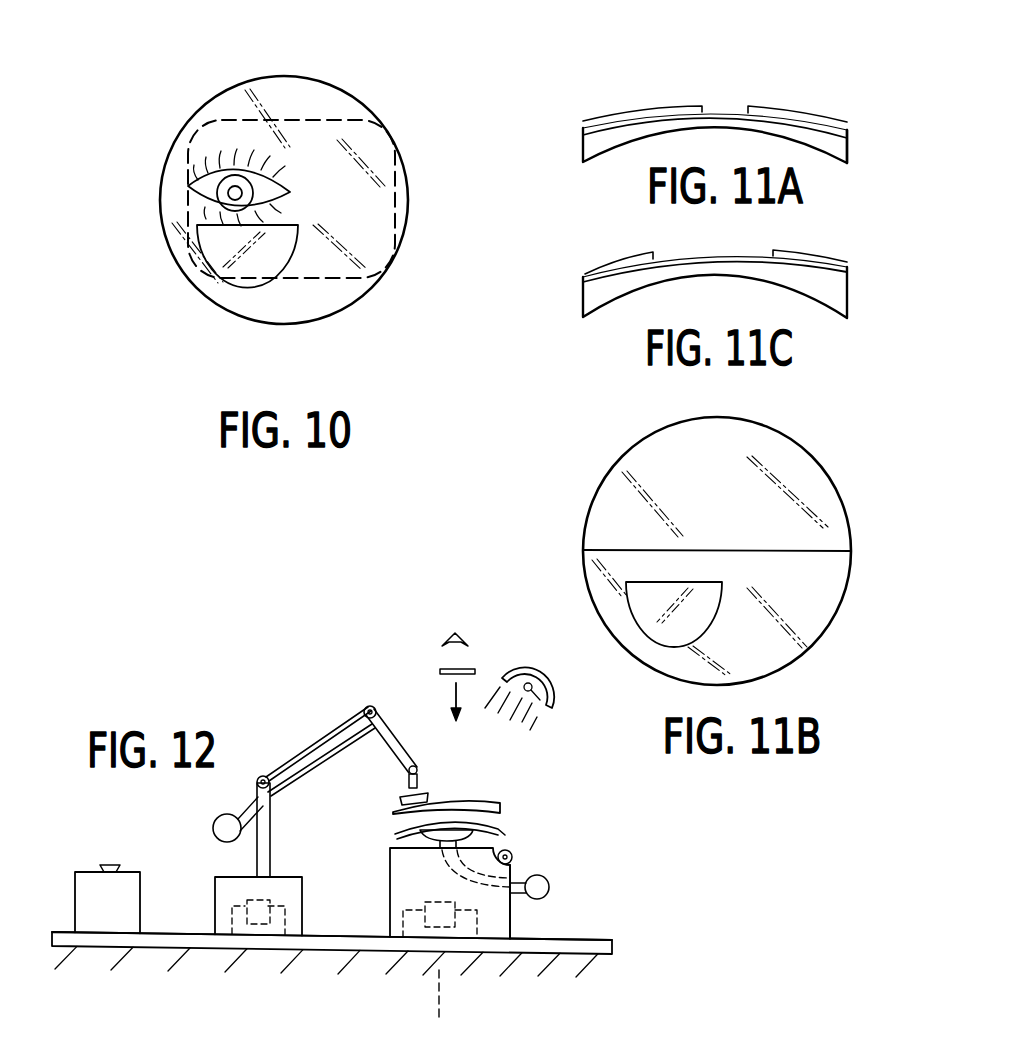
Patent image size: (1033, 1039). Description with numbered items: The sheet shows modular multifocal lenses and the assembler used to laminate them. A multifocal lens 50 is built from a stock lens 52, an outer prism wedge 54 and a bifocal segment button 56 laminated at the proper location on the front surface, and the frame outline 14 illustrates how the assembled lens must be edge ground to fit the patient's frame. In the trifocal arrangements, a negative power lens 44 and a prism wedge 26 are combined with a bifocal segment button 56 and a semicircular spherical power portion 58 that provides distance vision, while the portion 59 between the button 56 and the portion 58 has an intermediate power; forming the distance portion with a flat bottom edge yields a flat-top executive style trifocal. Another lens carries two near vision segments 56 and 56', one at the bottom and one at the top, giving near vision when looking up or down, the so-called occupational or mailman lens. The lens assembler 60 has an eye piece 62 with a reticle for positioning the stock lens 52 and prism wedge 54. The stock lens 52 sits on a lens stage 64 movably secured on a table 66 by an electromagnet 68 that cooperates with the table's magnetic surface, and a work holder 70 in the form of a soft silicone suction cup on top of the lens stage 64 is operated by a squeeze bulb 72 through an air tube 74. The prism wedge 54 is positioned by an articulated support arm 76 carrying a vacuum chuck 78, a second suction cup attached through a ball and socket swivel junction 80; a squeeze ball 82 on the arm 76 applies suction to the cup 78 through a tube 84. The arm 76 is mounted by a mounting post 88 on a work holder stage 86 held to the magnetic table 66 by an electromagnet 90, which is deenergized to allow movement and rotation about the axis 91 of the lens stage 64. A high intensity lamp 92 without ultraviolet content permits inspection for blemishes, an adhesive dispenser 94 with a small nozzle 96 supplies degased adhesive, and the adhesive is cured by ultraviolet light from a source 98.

In FIG. 10, the frame outline 14 is at (320, 120).
In FIG. 10, the multifocal lens 50 is at (138, 242).
In FIG. 10, the bifocal segment button 56 is at (226, 280).
In FIG. 11A, the bifocal segment button 56 is at (799, 97).
In FIG. 11C, the bifocal segment button 56 is at (814, 241).
In FIG. 11B, the bifocal segment button 56 is at (665, 636).
In FIG. 11C, the near vision segment 56' is at (619, 251).
In FIG. 11A, the semicircular spherical power portion 58 is at (597, 118).
In FIG. 11B, the semicircular spherical power portion 58 is at (797, 463).
In FIG. 11A, the intermediate power portion 59 is at (729, 99).
In FIG. 11B, the intermediate power portion 59 is at (805, 620).
In FIG. 11A, the prism wedge 26 is at (847, 130).
In FIG. 11A, the negative power lens 44 is at (591, 152).
In FIG. 12, the lens assembler 60 is at (566, 772).
In FIG. 12, the eye piece 62 is at (440, 670).
In FIG. 12, the ultraviolet light source 98 is at (548, 700).
In FIG. 12, the articulated support arm 76 is at (303, 753).
In FIG. 12, the tube 84 is at (290, 785).
In FIG. 12, the ball and socket swivel junction 80 is at (419, 764).
In FIG. 12, the vacuum chuck 78 is at (434, 780).
In FIG. 12, the squeeze ball 82 is at (215, 822).
In FIG. 12, the mounting post 88 is at (270, 840).
In FIG. 12, the work holder stage 86 is at (215, 897).
In FIG. 12, the electromagnet 90 is at (300, 905).
In FIG. 12, the adhesive dispenser 94 is at (75, 900).
In FIG. 12, the nozzle 96 is at (105, 866).
In FIG. 12, the prism wedge 54 is at (482, 806).
In FIG. 12, the stock lens 52 is at (502, 830).
In FIG. 12, the work holder 70 is at (420, 835).
In FIG. 12, the electromagnet 68 is at (390, 897).
In FIG. 12, the air tube 74 is at (522, 876).
In FIG. 12, the high intensity lamp 92 is at (515, 858).
In FIG. 12, the squeeze bulb 72 is at (549, 895).
In FIG. 12, the lens stage 64 is at (512, 922).
In FIG. 12, the table 66 is at (610, 946).
In FIG. 12, the axis 91 is at (445, 990).